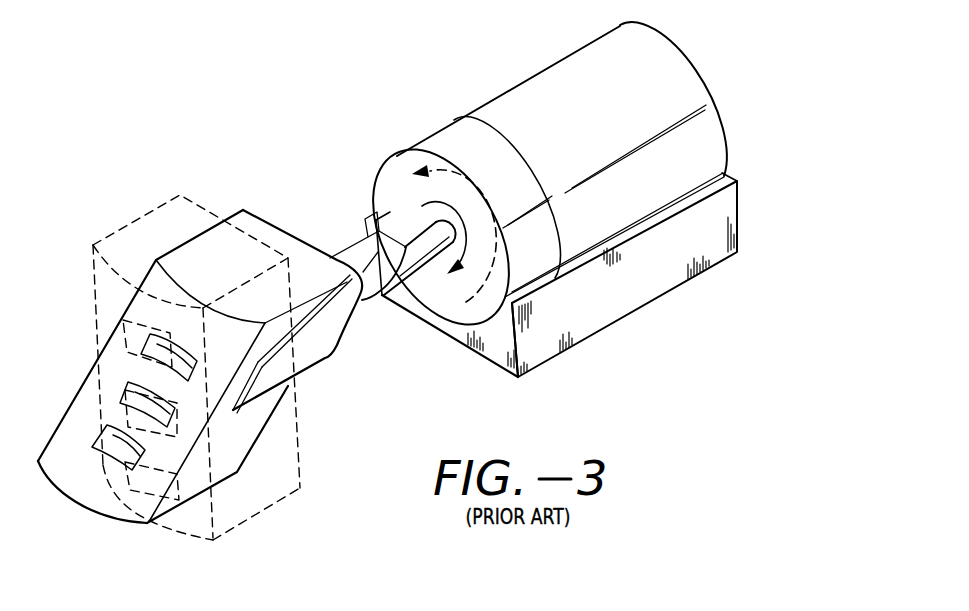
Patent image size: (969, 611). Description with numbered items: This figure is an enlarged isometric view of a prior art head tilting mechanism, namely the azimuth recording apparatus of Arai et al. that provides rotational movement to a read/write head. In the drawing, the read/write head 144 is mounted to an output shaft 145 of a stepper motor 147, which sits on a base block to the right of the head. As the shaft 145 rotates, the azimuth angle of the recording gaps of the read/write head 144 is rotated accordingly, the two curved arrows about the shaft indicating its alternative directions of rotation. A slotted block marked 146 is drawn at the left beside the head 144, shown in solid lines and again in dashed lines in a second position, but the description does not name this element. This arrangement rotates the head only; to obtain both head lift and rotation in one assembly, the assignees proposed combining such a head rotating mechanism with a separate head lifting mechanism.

The read/write head 144 is at (302, 267).
The output shaft 145 is at (415, 262).
The slotted workpiece fixture 146 is at (110, 450).
The stepper motor 147 is at (563, 78).